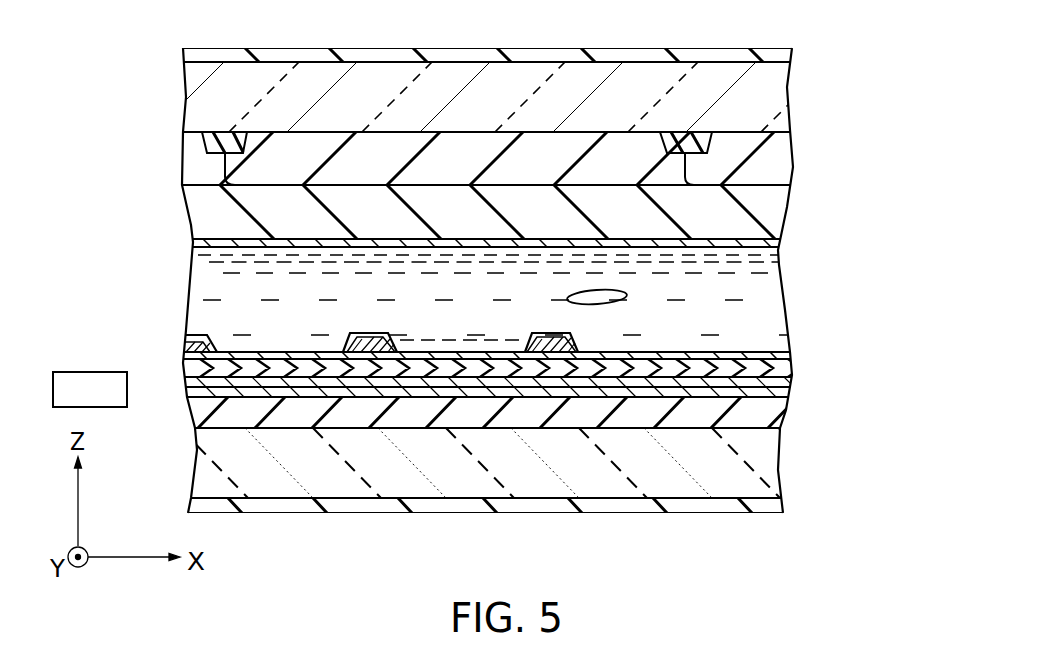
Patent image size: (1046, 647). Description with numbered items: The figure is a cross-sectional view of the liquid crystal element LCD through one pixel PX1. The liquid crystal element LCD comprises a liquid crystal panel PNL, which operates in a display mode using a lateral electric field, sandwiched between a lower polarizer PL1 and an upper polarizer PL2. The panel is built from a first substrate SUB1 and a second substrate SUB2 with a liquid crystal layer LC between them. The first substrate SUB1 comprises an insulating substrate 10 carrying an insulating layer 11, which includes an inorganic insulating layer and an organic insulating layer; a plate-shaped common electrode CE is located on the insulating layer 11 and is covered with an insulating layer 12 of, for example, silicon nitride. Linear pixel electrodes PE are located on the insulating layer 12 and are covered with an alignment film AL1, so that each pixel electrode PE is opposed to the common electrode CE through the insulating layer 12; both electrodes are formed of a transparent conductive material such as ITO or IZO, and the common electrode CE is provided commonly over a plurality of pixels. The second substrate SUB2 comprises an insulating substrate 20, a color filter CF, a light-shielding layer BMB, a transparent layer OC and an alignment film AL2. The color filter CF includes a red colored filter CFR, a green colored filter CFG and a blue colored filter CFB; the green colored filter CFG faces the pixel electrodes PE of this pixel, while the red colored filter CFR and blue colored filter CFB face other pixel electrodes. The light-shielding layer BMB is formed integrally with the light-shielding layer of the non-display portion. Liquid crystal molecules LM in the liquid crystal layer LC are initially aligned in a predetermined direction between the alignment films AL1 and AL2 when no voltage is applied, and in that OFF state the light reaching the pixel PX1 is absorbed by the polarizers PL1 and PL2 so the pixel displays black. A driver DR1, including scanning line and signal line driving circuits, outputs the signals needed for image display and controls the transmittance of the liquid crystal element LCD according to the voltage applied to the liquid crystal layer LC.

The liquid crystal element LCD is at (878, 64).
The liquid crystal panel PNL is at (174, 97).
The polarizer PL2 is at (780, 55).
The insulating substrate 20 is at (773, 88).
The second substrate SUB2 is at (814, 171).
The color filter CF is at (172, 170).
The red colored filter CFR is at (193, 158).
The green colored filter CFG is at (377, 152).
The blue colored filter CFB is at (777, 145).
The light-shielding layer BMB is at (222, 132).
The transparent layer OC is at (773, 212).
The alignment film AL2 is at (780, 242).
The liquid crystal layer LC is at (773, 290).
The liquid crystal molecules LM is at (627, 291).
The pixel electrodes PE is at (532, 335).
The alignment film AL1 is at (787, 353).
The insulating layer 12 is at (783, 370).
The common electrode CE is at (783, 388).
The insulating layer 11 is at (783, 412).
The first substrate SUB1 is at (801, 430).
The insulating substrate 10 is at (773, 470).
The polarizer PL1 is at (777, 505).
The driver DR1 is at (172, 390).
The pixel PX1 is at (500, 453).